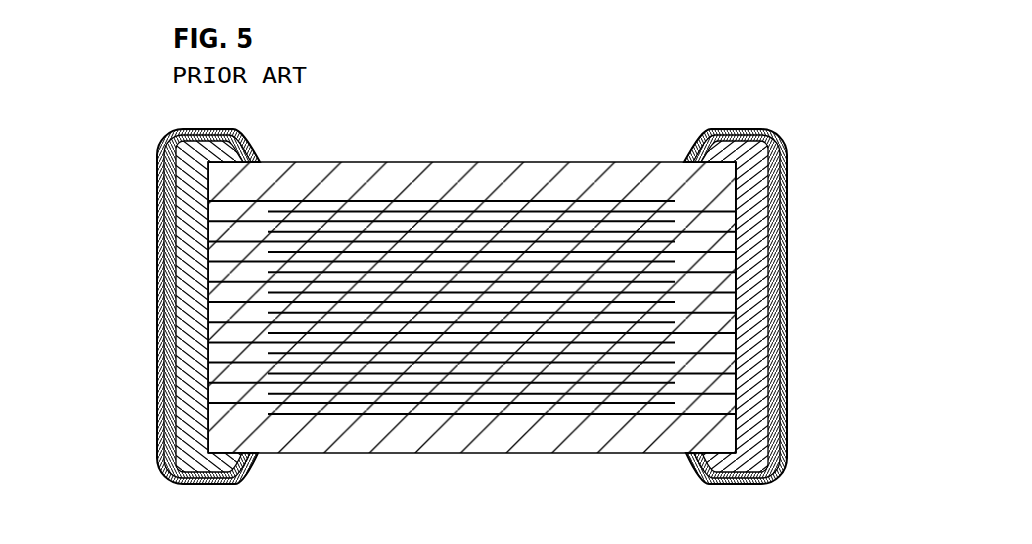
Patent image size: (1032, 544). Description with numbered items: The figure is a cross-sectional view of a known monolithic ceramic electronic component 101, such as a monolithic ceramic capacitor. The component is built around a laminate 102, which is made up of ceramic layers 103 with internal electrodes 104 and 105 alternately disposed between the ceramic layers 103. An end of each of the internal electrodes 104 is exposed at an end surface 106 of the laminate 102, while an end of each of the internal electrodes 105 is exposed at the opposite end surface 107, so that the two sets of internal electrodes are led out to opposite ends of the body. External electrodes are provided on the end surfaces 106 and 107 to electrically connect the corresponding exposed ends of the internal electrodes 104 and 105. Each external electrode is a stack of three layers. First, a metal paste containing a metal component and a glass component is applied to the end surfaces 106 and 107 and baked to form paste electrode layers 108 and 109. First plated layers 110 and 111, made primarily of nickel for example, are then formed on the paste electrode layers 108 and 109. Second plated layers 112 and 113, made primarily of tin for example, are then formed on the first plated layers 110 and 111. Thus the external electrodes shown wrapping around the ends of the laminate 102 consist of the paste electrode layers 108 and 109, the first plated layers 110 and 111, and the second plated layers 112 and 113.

The monolithic ceramic electronic component 101 is at (452, 147).
The laminate 102 is at (598, 162).
The ceramic layers 103 is at (748, 170).
The internal electrodes 104 is at (267, 405).
The internal electrodes 105 is at (588, 414).
The end surface 106 is at (212, 353).
The end surface 107 is at (730, 363).
The paste electrode layer 108 is at (190, 240).
The paste electrode layer 109 is at (748, 226).
The first plated layer 110 is at (157, 285).
The first plated layer 111 is at (787, 278).
The second plated layer 112 is at (157, 322).
The second plated layer 113 is at (787, 324).